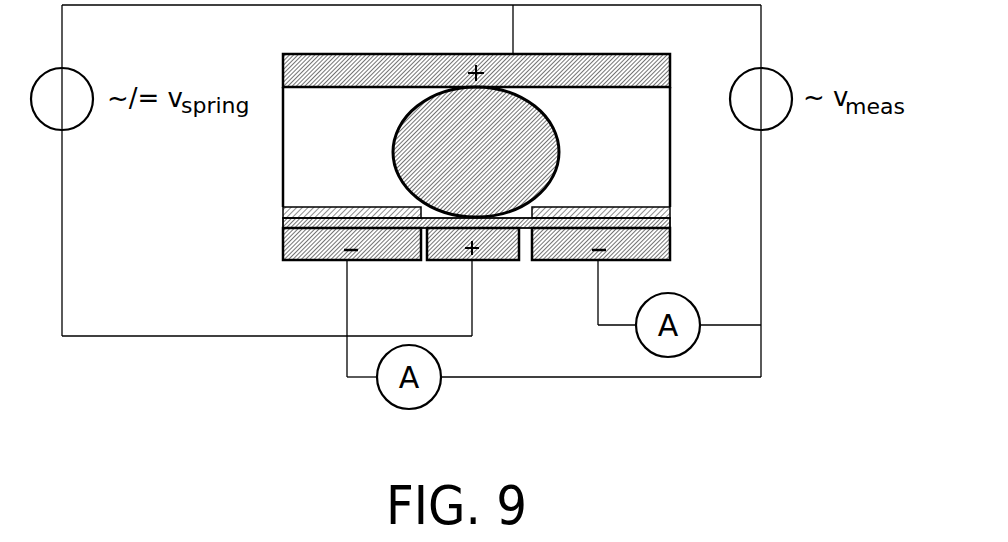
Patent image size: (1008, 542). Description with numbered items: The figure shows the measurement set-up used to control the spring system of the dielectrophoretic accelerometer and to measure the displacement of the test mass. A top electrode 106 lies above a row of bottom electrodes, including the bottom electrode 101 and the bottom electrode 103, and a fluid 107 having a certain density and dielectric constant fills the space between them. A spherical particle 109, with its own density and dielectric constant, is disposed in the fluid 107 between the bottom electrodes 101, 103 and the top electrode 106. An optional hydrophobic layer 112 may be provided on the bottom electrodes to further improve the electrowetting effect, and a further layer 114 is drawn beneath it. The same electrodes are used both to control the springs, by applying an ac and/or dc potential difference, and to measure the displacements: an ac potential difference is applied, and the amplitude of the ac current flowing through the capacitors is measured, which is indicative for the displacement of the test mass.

The bottom electrode 101 is at (286, 243).
The bottom electrode 103 is at (567, 262).
The top electrode 106 is at (452, 53).
The fluid 107 is at (316, 172).
The spherical particle 109 is at (505, 105).
The hydrophobic layer 112 is at (671, 213).
The dielectric layer 114 is at (671, 223).